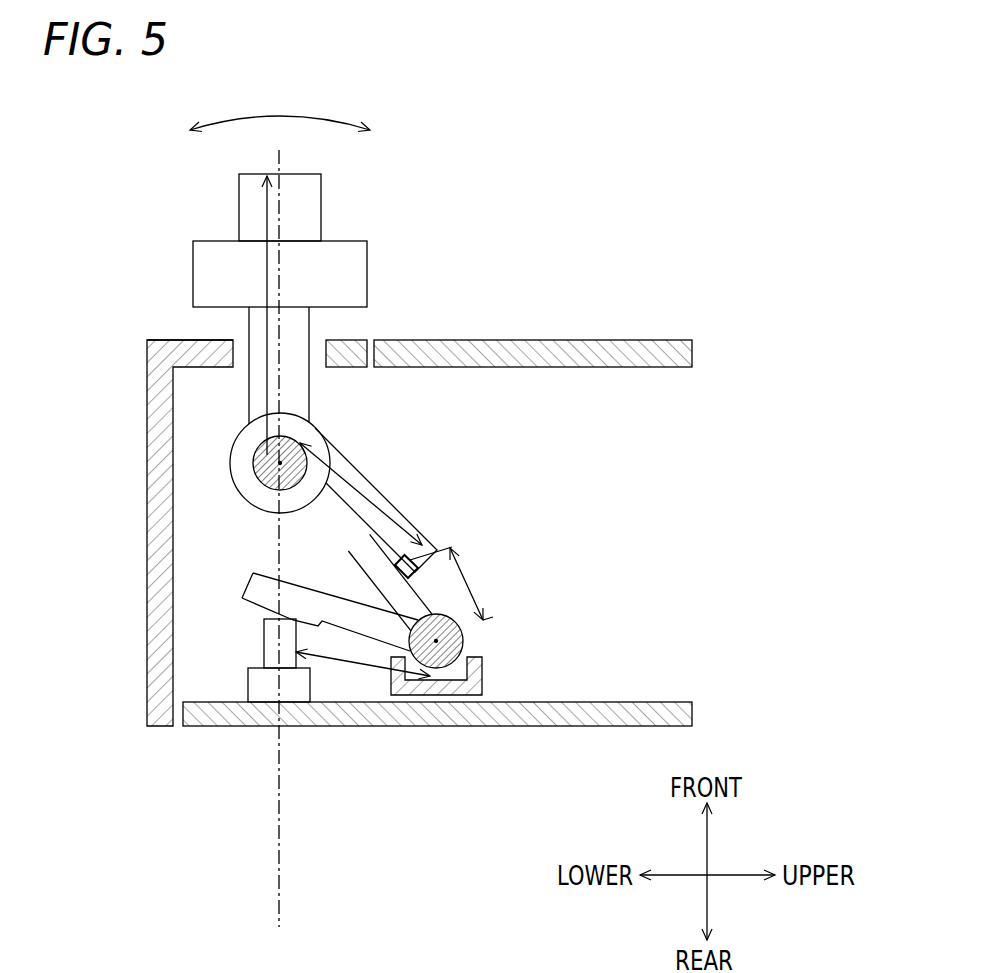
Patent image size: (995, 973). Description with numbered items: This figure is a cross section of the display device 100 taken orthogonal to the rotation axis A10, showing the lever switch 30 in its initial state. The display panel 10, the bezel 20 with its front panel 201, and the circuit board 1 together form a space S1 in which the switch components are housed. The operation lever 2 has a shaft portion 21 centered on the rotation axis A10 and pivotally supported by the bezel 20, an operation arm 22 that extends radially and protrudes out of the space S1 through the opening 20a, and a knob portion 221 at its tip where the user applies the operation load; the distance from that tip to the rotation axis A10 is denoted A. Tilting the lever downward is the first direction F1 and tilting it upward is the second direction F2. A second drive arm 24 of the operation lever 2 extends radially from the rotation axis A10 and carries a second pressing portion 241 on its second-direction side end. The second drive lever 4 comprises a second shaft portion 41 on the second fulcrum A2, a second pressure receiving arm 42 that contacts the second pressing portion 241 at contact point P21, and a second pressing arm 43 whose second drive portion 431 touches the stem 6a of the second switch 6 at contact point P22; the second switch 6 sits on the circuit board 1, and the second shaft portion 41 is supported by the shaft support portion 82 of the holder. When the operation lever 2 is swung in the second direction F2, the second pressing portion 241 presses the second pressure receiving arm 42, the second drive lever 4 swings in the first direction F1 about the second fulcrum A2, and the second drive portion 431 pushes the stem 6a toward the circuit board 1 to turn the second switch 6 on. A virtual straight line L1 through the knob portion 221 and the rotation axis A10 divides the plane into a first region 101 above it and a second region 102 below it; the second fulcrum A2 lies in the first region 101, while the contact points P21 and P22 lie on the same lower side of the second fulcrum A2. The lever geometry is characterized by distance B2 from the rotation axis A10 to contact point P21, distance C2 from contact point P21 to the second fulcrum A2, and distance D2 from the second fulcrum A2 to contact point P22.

The display device 100 is at (598, 170).
The circuit board 1 is at (555, 728).
The operation lever 2 is at (368, 238).
The second drive lever 4 is at (492, 632).
The second switch 6 is at (247, 668).
The stem 6a is at (264, 643).
The display panel 10 is at (623, 338).
The bezel 20 is at (147, 338).
The opening 20a is at (325, 352).
The shaft portion 21 is at (268, 463).
The operation arm 22 is at (250, 385).
The second drive arm 24 is at (400, 512).
The lever switch 30 is at (390, 265).
The second shaft portion 41 is at (482, 676).
The second pressure receiving arm 42 is at (383, 590).
The second pressing arm 43 is at (263, 574).
The shaft support portion 82 is at (428, 702).
The first region 101 is at (353, 917).
The second region 102 is at (243, 917).
The front panel 201 is at (183, 340).
The knob portion 221 is at (238, 208).
The second pressing portion 241 is at (395, 567).
The second drive portion 431 is at (243, 597).
The distance from knob portion tip to rotation axis A is at (267, 283).
The second fulcrum A2 is at (437, 642).
The rotation axis A10 is at (280, 465).
The distance from rotation axis to contact point P21 B2 is at (363, 490).
The distance from contact point P21 to second fulcrum C2 is at (468, 583).
The distance from second fulcrum to contact point P22 D2 is at (358, 663).
The first direction F1 is at (259, 132).
The second direction F2 is at (396, 132).
The virtual straight line L1 is at (278, 556).
The contact point P21 is at (410, 560).
The contact point P22 is at (293, 620).
The space S1 is at (615, 431).